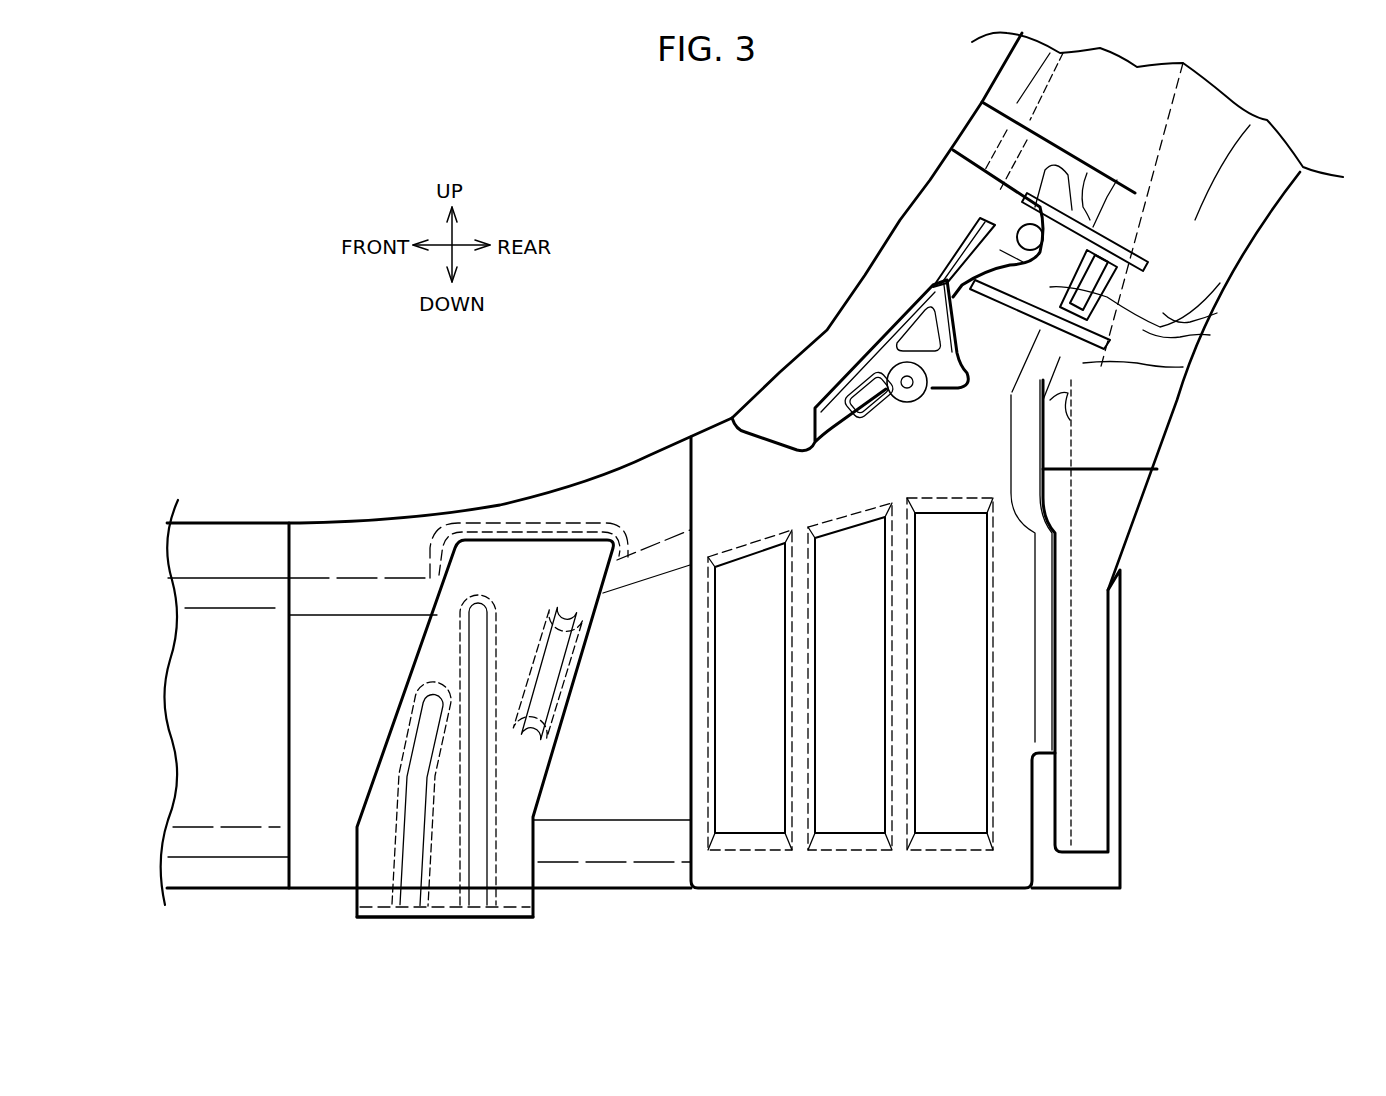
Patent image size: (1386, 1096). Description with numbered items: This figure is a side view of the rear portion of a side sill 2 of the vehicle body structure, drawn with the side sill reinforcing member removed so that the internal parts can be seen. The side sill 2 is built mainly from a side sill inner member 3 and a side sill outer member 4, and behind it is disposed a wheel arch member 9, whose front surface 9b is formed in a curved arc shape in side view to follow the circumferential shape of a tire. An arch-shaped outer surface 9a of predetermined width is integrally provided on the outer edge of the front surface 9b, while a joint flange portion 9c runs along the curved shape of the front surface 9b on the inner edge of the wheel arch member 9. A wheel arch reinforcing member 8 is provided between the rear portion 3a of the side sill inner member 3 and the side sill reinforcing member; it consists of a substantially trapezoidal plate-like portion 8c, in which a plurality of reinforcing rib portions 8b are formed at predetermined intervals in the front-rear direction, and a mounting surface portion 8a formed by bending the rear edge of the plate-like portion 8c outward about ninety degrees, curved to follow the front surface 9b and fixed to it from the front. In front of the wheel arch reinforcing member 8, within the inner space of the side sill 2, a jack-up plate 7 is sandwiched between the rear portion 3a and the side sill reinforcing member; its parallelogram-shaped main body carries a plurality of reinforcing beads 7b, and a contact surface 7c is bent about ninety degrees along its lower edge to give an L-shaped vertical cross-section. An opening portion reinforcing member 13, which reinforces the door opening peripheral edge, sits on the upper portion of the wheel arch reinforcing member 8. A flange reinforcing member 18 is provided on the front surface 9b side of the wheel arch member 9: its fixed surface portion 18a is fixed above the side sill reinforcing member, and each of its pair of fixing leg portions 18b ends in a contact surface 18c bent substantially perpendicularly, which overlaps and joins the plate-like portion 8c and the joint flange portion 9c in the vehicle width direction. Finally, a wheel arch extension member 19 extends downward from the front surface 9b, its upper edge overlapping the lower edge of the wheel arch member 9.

The side sill 2 is at (337, 472).
The side sill inner member 3 is at (507, 500).
The rear portion of the side sill inner member 3a is at (582, 497).
The side sill outer member 4 is at (253, 660).
The jack-up plate 7 is at (423, 643).
The reinforcing bead 7b is at (417, 725).
The contact surface 7c is at (445, 918).
The wheel arch reinforcing member 8 is at (687, 491).
The mounting surface portion 8a is at (1180, 370).
The reinforcing rib portion 8b is at (800, 780).
The plate-like portion 8c is at (838, 497).
The wheel arch member 9 is at (1263, 217).
The arch-shaped outer surface 9a is at (1217, 313).
The front surface 9b is at (1050, 400).
The joint flange portion 9c is at (1013, 82).
The opening portion reinforcing member 13 is at (860, 325).
The flange reinforcing member 18 is at (1135, 241).
The fixed surface portion 18a is at (1220, 283).
The fixing leg portion 18b is at (1090, 207).
The contact surface 18c is at (1055, 153).
The wheel arch extension member 19 is at (1100, 520).